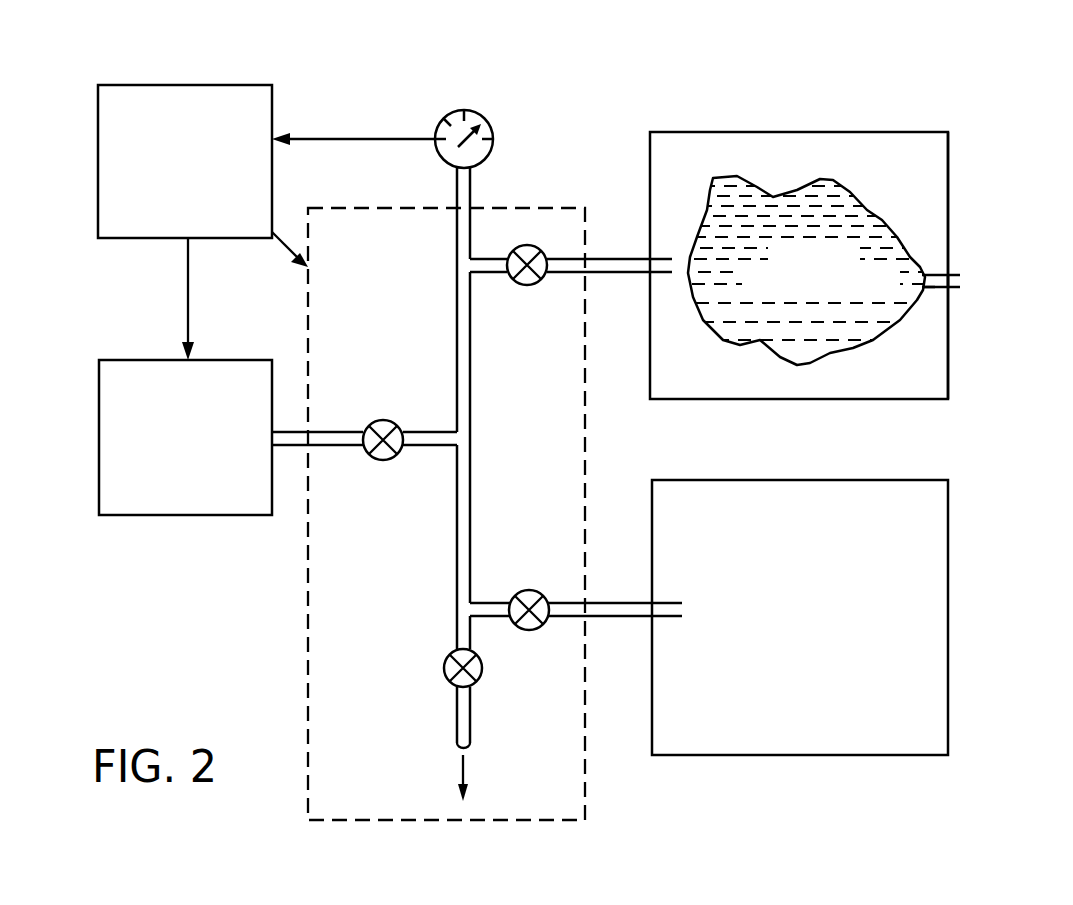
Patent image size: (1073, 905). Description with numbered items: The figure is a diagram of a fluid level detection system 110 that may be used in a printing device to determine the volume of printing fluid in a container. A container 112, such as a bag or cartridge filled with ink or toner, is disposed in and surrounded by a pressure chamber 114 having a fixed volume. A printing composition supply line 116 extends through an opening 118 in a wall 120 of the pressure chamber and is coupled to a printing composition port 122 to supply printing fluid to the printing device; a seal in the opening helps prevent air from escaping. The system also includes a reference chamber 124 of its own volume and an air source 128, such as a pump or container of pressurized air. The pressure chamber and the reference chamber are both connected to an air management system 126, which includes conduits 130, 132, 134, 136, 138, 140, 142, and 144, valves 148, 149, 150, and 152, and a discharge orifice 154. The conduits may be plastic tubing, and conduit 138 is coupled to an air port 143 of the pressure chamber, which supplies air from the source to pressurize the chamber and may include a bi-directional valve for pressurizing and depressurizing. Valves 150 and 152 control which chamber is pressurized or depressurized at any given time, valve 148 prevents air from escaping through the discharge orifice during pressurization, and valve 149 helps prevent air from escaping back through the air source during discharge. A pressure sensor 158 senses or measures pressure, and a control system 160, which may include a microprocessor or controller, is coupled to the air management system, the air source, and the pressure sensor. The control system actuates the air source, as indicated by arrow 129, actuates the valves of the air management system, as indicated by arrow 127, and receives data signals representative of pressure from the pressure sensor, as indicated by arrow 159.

The fluid level detection system 110 is at (640, 64).
The container 112 is at (893, 253).
The pressure chamber 114 is at (860, 137).
The printing composition supply line 116 is at (952, 287).
The opening 118 is at (960, 285).
The wall 120 is at (952, 153).
The printing composition port 122 is at (925, 288).
The reference chamber 124 is at (873, 505).
The air management system 126 is at (294, 628).
The arrow 127 is at (283, 238).
The air source 128 is at (200, 493).
The arrow 129 is at (185, 282).
The conduit 130 is at (347, 435).
The conduit 132 is at (422, 435).
The conduit 134 is at (464, 708).
The conduit 136 is at (485, 268).
The conduit 138 is at (615, 262).
The conduit 140 is at (461, 414).
The conduit 142 is at (492, 611).
The air port 143 is at (648, 270).
The conduit 144 is at (609, 609).
The valve 148 is at (445, 661).
The valve 149 is at (383, 461).
The valve 150 is at (527, 286).
The valve 152 is at (529, 632).
The discharge orifice 154 is at (461, 745).
The pressure sensor 158 is at (477, 110).
The arrow 159 is at (365, 135).
The control system 160 is at (197, 98).